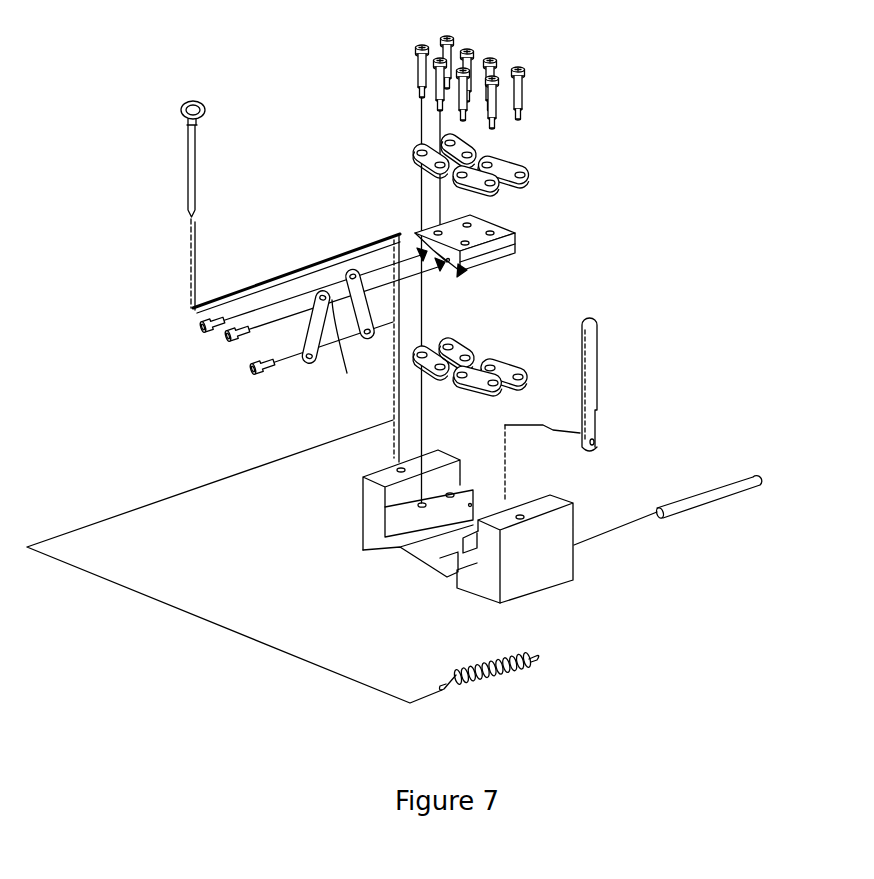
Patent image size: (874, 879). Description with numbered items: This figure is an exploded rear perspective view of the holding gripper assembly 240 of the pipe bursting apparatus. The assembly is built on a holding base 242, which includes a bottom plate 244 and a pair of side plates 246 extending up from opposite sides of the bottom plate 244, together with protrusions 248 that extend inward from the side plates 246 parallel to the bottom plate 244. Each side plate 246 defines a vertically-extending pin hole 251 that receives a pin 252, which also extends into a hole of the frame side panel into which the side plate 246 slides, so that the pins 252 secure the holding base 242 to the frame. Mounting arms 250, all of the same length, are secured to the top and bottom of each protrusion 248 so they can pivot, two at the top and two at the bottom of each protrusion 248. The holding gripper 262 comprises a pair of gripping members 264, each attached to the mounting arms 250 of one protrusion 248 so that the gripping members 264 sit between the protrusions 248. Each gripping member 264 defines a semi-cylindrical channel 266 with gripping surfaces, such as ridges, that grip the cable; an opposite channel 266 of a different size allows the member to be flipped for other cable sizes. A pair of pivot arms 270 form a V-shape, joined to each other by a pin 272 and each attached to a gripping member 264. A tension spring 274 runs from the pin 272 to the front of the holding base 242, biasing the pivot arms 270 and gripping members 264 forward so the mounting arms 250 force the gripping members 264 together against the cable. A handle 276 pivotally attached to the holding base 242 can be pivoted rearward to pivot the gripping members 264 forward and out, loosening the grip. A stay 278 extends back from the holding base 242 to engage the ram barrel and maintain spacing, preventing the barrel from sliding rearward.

The holding gripper assembly 240 is at (752, 606).
The holding base 242 is at (469, 557).
The bottom plate 244 is at (420, 558).
The side plates 246 is at (377, 498).
The protrusions 248 is at (387, 535).
The mounting arms 250 is at (394, 150).
The pin hole 251 is at (503, 505).
The pin 252 is at (186, 152).
The holding gripper 262 is at (400, 232).
The gripping members 264 is at (475, 216).
The channel 266 is at (436, 285).
The pivot arms 270 is at (367, 341).
The pin 272 is at (253, 371).
The tension spring 274 is at (507, 677).
The handle 276 is at (600, 365).
The stay 278 is at (727, 500).